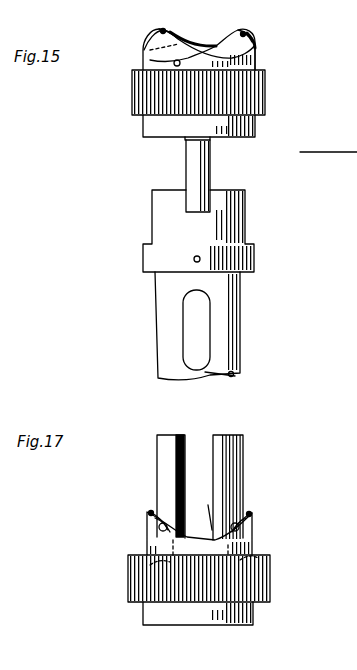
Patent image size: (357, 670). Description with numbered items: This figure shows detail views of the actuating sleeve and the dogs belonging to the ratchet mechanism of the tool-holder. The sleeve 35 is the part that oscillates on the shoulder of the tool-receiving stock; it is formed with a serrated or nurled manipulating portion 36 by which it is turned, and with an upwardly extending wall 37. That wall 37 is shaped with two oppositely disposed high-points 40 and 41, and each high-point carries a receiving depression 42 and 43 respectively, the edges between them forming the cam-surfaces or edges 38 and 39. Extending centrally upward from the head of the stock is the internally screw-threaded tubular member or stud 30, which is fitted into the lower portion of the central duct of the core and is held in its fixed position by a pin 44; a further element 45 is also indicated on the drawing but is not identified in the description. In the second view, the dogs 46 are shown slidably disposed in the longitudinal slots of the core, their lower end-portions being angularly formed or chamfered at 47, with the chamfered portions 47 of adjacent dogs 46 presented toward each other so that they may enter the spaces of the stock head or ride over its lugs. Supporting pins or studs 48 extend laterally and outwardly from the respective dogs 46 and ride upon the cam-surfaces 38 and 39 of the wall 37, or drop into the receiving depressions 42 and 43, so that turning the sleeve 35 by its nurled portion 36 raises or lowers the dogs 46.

In FIG. 15, the tubular member or stud 30 is at (186, 162).
In FIG. 15, the sleeve 35 is at (250, 126).
In FIG. 17, the sleeve 35 is at (250, 612).
In FIG. 15, the serrated or nurled manipulating portion 36 is at (256, 97).
In FIG. 17, the serrated or nurled manipulating portion 36 is at (262, 588).
In FIG. 15, the upwardly extending wall 37 is at (256, 63).
In FIG. 17, the upwardly extending wall 37 is at (150, 548).
In FIG. 15, the cam-surface or edge 38 is at (141, 50).
In FIG. 17, the cam-surface or edge 38 is at (198, 538).
In FIG. 15, the cam-surface or edge 39 is at (197, 47).
In FIG. 17, the cam-surface or edge 39 is at (211, 526).
In FIG. 15, the high-point 40 is at (176, 34).
In FIG. 15, the high-point 41 is at (156, 28).
In FIG. 17, the high-point 41 is at (157, 511).
In FIG. 15, the receiving depression 42 is at (163, 29).
In FIG. 17, the receiving depression 42 is at (149, 512).
In FIG. 15, the receiving depression 43 is at (245, 32).
In FIG. 17, the receiving depression 43 is at (250, 515).
In FIG. 15, the pin 44 is at (195, 262).
In FIG. 15, the screw 45 is at (175, 65).
In FIG. 17, the dog 46 is at (165, 478).
In FIG. 17, the angular or chamfered portion 47 is at (160, 563).
In FIG. 17, the supporting pin or stud 48 is at (159, 530).